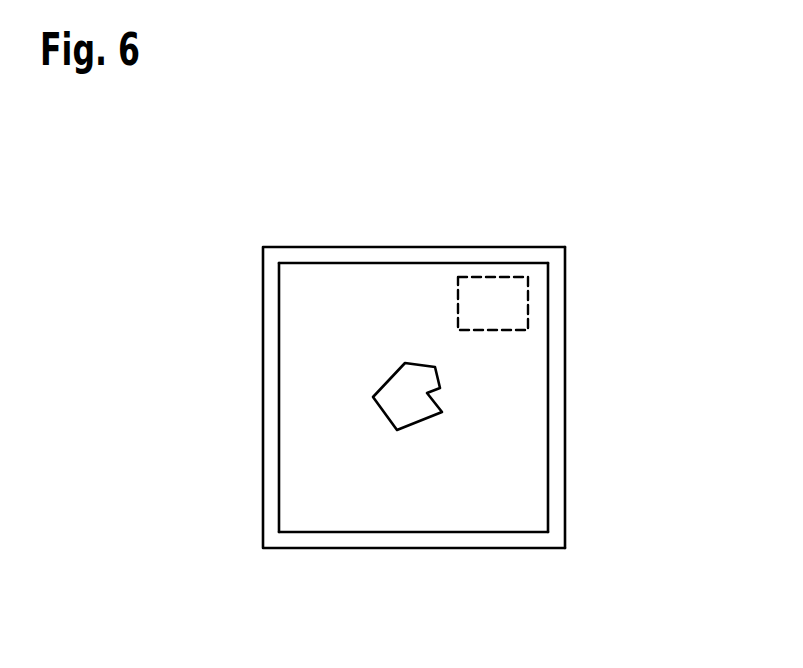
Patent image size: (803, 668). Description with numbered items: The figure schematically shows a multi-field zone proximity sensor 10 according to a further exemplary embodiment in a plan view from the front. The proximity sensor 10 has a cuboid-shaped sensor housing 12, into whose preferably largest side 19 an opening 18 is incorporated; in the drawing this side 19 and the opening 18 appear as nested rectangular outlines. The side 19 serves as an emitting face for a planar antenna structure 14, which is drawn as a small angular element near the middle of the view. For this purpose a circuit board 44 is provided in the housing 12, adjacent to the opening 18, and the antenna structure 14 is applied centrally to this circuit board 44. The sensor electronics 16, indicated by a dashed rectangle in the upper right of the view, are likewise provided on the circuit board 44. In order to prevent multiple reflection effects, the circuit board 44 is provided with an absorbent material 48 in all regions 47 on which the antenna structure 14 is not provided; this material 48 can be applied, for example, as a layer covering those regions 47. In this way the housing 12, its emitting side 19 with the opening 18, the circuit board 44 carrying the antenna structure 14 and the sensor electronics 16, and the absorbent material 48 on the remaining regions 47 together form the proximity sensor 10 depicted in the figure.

The multi-field zone proximity sensor 10 is at (266, 196).
The sensor housing 12 is at (365, 246).
The planar antenna structure 14 is at (415, 388).
The sensor electronics 16 is at (491, 295).
The opening 18 is at (553, 340).
The side 19 is at (505, 534).
The circuit board 44 is at (315, 523).
The regions 47 is at (300, 336).
The absorbent material 48 is at (527, 482).